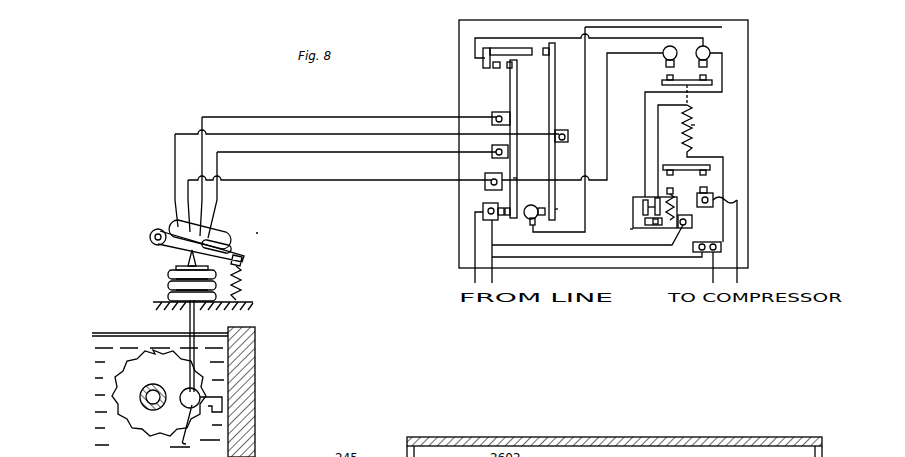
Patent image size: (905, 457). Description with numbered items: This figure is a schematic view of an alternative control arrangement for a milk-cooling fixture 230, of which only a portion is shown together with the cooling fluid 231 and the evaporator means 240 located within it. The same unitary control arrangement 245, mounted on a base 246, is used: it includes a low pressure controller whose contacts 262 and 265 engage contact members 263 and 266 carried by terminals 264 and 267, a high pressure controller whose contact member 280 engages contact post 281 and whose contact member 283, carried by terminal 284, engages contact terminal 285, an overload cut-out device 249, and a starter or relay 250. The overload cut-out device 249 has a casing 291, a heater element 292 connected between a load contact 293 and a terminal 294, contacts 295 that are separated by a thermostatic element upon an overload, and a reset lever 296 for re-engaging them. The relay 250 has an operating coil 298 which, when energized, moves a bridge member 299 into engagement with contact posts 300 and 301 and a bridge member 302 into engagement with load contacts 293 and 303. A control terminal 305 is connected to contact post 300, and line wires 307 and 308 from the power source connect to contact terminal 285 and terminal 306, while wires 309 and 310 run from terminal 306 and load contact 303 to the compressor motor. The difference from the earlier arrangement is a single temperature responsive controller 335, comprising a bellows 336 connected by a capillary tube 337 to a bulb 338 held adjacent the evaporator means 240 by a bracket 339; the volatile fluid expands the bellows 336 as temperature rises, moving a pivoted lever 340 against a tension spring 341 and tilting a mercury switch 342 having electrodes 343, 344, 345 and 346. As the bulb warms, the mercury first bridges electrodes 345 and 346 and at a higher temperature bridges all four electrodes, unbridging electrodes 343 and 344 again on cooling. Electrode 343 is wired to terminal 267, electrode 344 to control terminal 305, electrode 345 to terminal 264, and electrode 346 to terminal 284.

The fixture 230 is at (270, 378).
The cooling fluid 231 is at (122, 334).
The evaporator means 240 is at (156, 414).
The unitary control arrangement 245 is at (440, 89).
The base 246 is at (459, 101).
The overload cut-out device 249 is at (620, 232).
The starter or relay 250 is at (707, 127).
The contact 262 is at (494, 66).
The contact member 263 is at (510, 93).
The terminal 264 is at (500, 112).
The contact 265 is at (499, 38).
The contact member 266 is at (555, 95).
The terminal 267 is at (561, 129).
The contact member 280 is at (554, 209).
The contact post 281 is at (540, 206).
The contact member 283 is at (517, 180).
The terminal 284 is at (492, 149).
The contact terminal 285 is at (485, 202).
The casing 291 is at (633, 213).
The heater element 292 is at (693, 198).
The load contact 293 is at (669, 188).
The terminal 294 is at (692, 226).
The contacts 295 is at (634, 198).
The reset lever 296 is at (653, 228).
The operating coil 298 is at (694, 145).
The bridge member 299 is at (662, 82).
The contact post 300 is at (664, 56).
The contact post 301 is at (709, 49).
The bridge member 302 is at (678, 164).
The load contact 303 is at (708, 188).
The control terminal 305 is at (488, 174).
The terminal 306 is at (695, 242).
The line wire 307 is at (475, 277).
The line wire 308 is at (492, 277).
The wire 309 is at (712, 277).
The wire 310 is at (740, 277).
The temperature responsive controller 335 is at (270, 233).
The bellows 336 is at (168, 280).
The capillary tube 337 is at (189, 322).
The bulb 338 is at (196, 438).
The bracket 339 is at (225, 418).
The pivoted lever 340 is at (168, 250).
The tension spring 341 is at (242, 284).
The mercury switch 342 is at (235, 243).
The electrode 343 is at (175, 215).
The electrode 344 is at (190, 212).
The electrode 345 is at (217, 208).
The electrode 346 is at (216, 225).